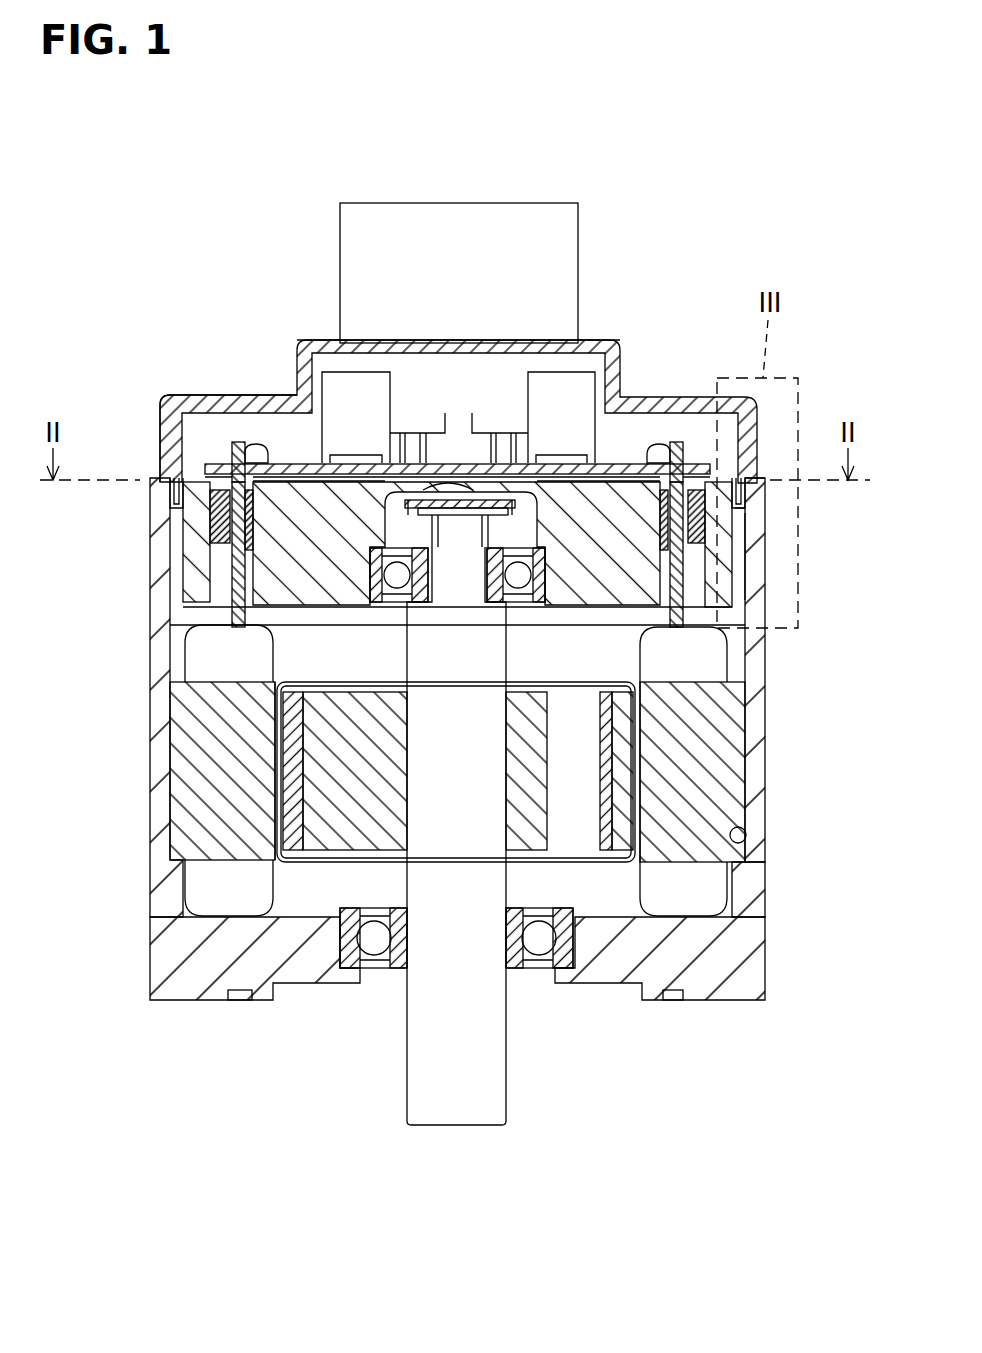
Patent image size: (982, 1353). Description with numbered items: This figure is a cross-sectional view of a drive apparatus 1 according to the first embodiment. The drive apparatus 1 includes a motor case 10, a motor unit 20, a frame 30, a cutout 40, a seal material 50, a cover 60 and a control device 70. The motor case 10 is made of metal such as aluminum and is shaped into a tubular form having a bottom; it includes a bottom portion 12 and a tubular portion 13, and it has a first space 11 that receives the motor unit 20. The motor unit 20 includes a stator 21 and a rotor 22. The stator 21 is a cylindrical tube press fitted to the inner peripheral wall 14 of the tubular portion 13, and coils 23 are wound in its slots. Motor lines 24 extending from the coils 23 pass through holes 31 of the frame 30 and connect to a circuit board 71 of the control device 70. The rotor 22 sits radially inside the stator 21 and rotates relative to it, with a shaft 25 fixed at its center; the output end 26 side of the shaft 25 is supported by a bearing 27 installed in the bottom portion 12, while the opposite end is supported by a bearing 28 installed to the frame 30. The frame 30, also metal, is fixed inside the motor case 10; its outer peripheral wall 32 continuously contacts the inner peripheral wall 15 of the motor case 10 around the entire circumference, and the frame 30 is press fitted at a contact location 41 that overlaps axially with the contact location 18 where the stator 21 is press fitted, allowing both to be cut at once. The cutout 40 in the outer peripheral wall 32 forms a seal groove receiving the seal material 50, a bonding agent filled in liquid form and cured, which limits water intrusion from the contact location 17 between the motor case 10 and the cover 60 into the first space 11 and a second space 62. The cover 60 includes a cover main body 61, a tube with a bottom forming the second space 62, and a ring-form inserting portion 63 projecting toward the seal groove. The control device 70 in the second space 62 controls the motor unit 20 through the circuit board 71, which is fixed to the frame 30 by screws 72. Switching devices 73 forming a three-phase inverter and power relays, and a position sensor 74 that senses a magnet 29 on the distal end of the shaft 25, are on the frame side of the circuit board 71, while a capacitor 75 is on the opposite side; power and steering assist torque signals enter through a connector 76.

The drive apparatus 1 is at (171, 210).
The motor case 10 is at (784, 724).
The first space 11 is at (551, 668).
The bottom portion 12 is at (257, 960).
The tubular portion 13 is at (160, 802).
The inner peripheral wall 14 is at (745, 836).
The inner peripheral wall 15 is at (750, 565).
The contact location 17 is at (774, 470).
The contact location 18 is at (766, 812).
The motor unit 20 is at (748, 674).
The stator 21 is at (693, 765).
The rotor 22 is at (642, 736).
The coils 23 is at (223, 663).
The motor lines 24 is at (225, 565).
The shaft 25 is at (458, 752).
The output end 26 is at (446, 1125).
The bearing 27 is at (370, 940).
The bearing 28 is at (383, 570).
The magnet 29 is at (477, 500).
The frame 30 is at (200, 543).
The holes 31 is at (228, 598).
The outer peripheral wall 32 is at (708, 530).
The cutout 40 is at (745, 493).
The contact location 41 is at (752, 596).
The seal material 50 is at (745, 505).
The cover 60 is at (676, 385).
The cover main body 61 is at (171, 432).
The second space 62 is at (618, 446).
The inserting portion 63 is at (172, 494).
The control device 70 is at (272, 423).
The circuit board 71 is at (236, 460).
The screws 72 is at (252, 445).
The switching devices 73 is at (528, 480).
The position sensor 74 is at (412, 440).
The capacitor 75 is at (593, 343).
The connector 76 is at (548, 203).